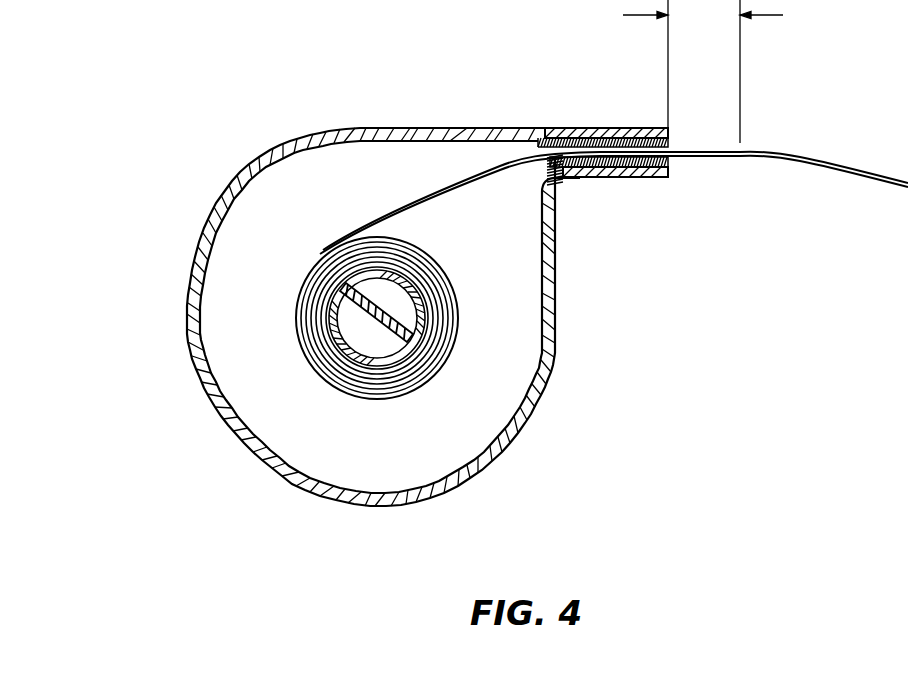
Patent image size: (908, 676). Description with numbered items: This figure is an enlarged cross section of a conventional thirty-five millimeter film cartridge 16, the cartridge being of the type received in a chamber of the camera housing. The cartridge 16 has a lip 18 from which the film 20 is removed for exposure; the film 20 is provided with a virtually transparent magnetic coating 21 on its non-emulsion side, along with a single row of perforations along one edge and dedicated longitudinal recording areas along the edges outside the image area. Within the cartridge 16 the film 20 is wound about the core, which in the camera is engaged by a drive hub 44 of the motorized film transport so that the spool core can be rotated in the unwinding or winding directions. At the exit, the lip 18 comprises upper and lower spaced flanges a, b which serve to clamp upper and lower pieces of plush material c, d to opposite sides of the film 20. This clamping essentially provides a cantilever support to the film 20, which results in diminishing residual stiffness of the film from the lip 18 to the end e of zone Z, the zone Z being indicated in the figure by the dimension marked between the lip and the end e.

The film cartridge 16 is at (187, 300).
The lip 18 is at (603, 148).
The film 20 is at (614, 176).
The magnetic coating 21 is at (850, 162).
The drive hub 44 is at (360, 363).
The upper flange a is at (582, 128).
The lower flange b is at (638, 178).
The upper piece of plush material c is at (643, 128).
The lower piece of plush material d is at (590, 178).
The end of zone Z e is at (740, 76).
The zone Z is at (711, 71).